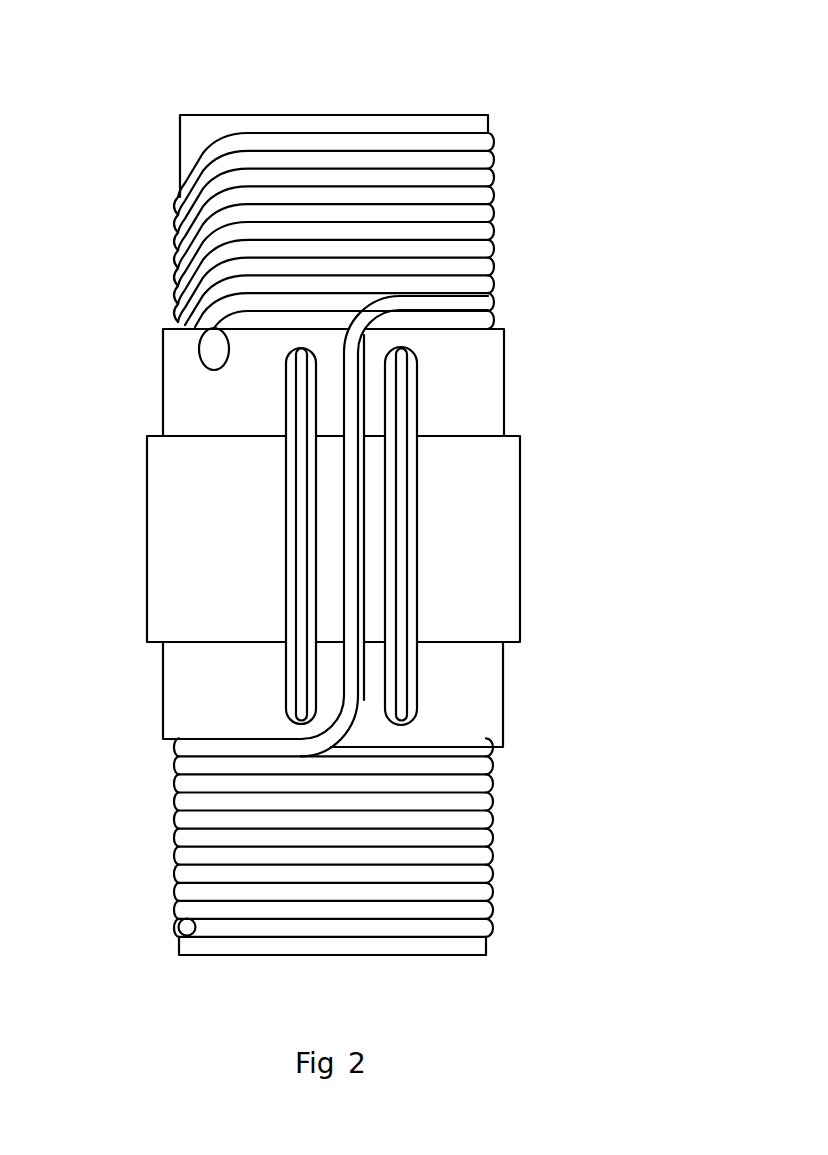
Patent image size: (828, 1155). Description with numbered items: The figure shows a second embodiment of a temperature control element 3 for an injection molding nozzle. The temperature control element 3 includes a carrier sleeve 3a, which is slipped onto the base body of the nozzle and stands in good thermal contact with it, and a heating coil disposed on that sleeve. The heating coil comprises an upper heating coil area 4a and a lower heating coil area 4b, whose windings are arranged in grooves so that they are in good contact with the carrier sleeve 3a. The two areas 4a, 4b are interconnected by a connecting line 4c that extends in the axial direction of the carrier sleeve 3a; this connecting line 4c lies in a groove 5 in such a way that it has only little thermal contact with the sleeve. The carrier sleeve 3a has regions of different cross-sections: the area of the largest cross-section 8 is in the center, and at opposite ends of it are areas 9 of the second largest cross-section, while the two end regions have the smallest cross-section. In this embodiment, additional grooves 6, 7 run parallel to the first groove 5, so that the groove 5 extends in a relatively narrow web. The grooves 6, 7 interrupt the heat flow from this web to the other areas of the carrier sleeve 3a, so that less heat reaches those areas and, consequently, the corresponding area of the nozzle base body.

The temperature control element 3 is at (447, 80).
The carrier sleeve 3a is at (193, 128).
The upper heating coil area 4a is at (498, 132).
The lower heating coil area 4b is at (495, 757).
The connecting line 4c is at (357, 548).
The groove 5 is at (360, 588).
The additional groove 6 is at (410, 387).
The additional groove 7 is at (303, 492).
The area of the largest cross-section 8 is at (492, 615).
The area of the second largest cross-section 9 is at (475, 718).